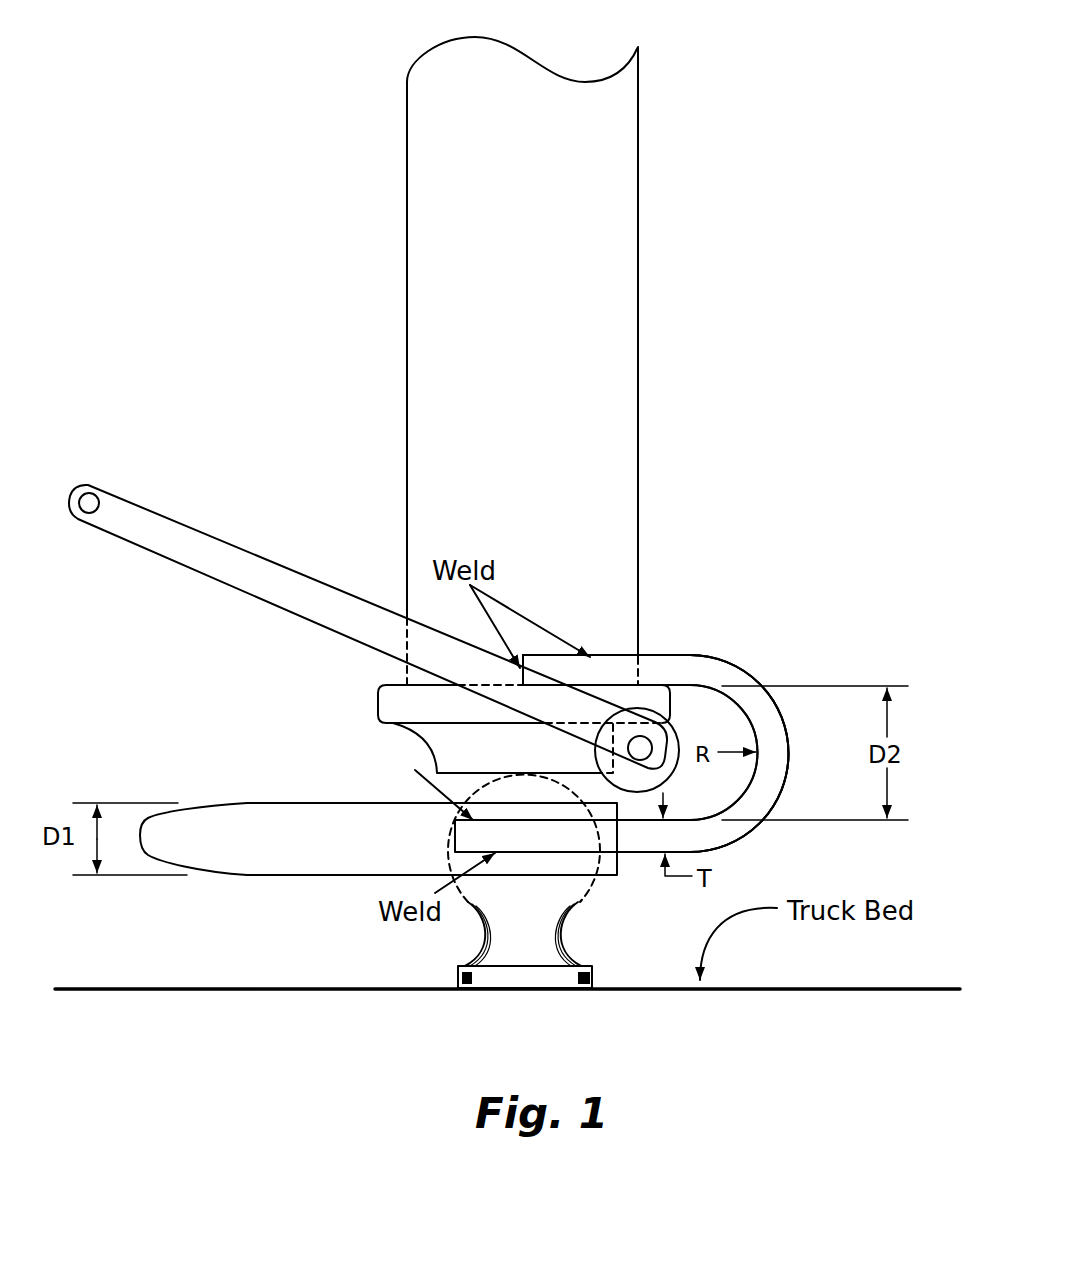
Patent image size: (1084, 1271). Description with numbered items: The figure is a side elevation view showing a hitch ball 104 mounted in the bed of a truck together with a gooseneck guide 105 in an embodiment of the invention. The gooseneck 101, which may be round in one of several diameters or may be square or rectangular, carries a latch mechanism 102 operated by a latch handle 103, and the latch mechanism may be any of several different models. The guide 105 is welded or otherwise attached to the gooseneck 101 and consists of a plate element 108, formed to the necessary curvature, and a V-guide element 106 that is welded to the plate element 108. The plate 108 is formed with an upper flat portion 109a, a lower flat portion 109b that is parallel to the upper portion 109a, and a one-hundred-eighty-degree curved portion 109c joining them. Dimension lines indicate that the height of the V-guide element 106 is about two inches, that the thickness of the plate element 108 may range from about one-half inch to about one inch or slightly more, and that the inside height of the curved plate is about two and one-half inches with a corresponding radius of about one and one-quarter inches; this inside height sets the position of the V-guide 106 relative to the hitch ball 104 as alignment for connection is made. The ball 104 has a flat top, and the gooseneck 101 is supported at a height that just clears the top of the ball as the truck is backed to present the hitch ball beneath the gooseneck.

The gooseneck 101 is at (405, 198).
The latch mechanism 102 is at (389, 687).
The latch handle 103 is at (172, 525).
The hitch ball 104 is at (450, 856).
The gooseneck guide 105 is at (750, 520).
The V-guide element 106 is at (342, 802).
The plate element 108 is at (745, 684).
The upper flat portion 109a is at (625, 655).
The lower flat portion 109b is at (543, 853).
The curved portion 109c is at (788, 763).